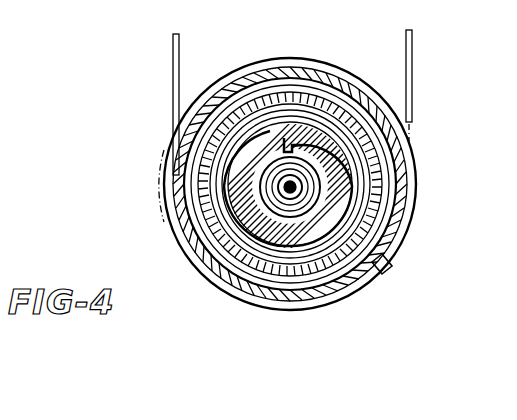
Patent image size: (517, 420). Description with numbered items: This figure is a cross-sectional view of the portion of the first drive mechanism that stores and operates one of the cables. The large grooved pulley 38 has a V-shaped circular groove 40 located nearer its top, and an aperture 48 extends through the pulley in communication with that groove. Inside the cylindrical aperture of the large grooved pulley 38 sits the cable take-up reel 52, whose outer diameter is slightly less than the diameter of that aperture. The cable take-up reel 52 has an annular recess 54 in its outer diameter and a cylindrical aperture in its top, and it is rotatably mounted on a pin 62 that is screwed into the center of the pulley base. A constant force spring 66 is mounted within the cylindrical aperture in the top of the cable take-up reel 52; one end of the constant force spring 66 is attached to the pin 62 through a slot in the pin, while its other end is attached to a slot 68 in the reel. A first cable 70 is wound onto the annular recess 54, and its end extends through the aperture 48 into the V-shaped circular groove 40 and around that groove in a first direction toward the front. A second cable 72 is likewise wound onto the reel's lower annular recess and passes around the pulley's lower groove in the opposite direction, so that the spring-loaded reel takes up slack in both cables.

The large grooved pulley 38 is at (272, 82).
The V-shaped circular groove 40 is at (418, 180).
The aperture 48 is at (385, 270).
The cable take-up reel 52 is at (235, 200).
The annular recess 54 is at (382, 158).
The pin 62 is at (418, 230).
The constant force spring 66 is at (245, 222).
The slot 68 is at (297, 137).
The first cable 70 is at (173, 78).
The second cable 72 is at (411, 82).